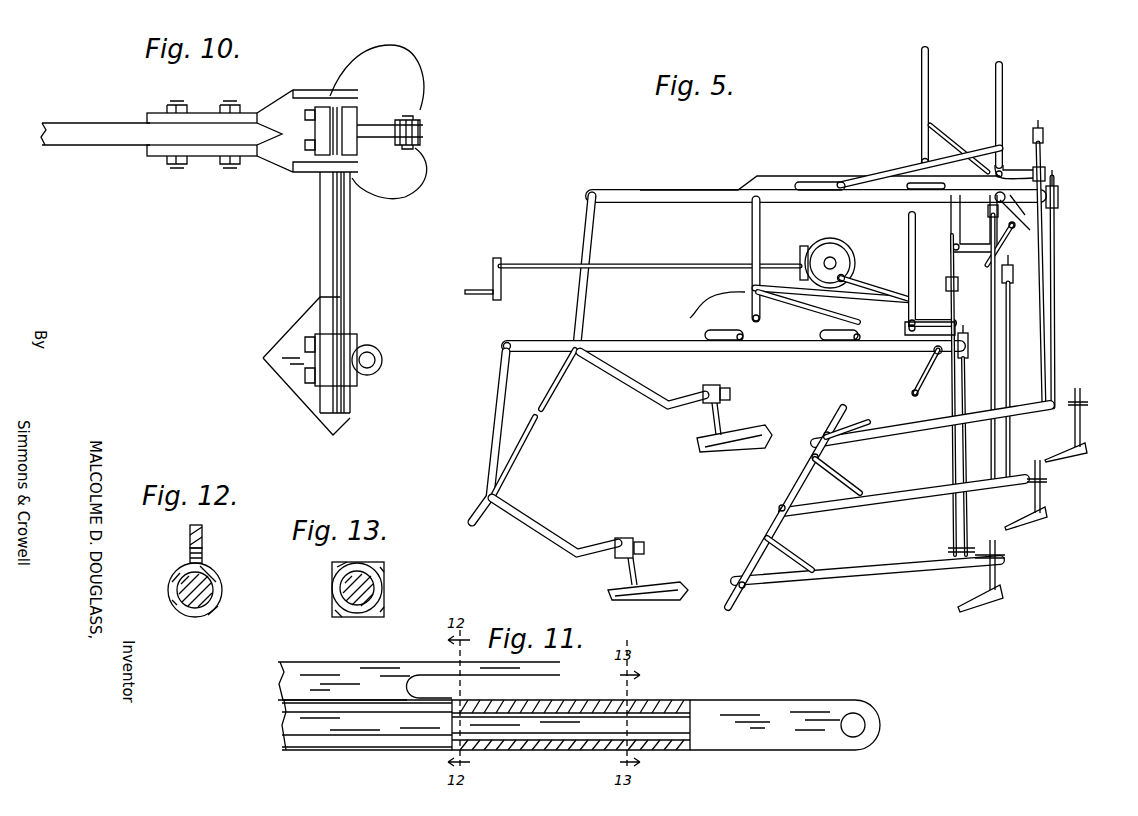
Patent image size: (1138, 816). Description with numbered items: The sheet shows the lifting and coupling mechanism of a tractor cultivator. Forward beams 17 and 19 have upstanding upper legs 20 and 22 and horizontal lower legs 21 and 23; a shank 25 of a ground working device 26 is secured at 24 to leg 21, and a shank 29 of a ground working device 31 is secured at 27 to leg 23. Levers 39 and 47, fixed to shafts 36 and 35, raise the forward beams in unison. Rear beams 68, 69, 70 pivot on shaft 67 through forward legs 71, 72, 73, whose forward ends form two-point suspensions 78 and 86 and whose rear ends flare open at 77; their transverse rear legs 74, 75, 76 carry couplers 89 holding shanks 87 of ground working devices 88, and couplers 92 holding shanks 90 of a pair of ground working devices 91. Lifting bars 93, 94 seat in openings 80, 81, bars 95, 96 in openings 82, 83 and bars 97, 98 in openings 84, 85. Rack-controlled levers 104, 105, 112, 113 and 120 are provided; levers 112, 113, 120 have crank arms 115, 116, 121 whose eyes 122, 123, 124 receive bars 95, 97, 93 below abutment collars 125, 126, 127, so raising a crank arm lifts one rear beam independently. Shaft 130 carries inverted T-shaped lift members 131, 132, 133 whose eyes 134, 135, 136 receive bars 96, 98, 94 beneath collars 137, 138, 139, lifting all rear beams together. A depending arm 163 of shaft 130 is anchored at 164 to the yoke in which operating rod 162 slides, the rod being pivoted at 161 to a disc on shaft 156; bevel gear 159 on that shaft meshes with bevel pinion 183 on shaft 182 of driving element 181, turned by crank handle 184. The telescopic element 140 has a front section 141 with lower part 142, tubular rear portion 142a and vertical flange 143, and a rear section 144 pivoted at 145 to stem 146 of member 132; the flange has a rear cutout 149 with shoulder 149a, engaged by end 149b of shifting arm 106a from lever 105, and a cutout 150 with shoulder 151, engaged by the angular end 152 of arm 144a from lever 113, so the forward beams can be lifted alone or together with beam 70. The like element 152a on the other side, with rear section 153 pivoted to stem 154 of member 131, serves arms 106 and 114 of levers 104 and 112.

In FIG. 10, the forward leg 71 is at (88, 132).
In FIG. 5, the forward leg 71 is at (925, 432).
In FIG. 10, the open flared rear end 77 is at (292, 165).
In FIG. 10, the coupler 92 is at (318, 108).
In FIG. 10, the shank 90 is at (377, 128).
In FIG. 10, the ground working device 91 is at (415, 178).
In FIG. 5, the spring controlled telescopic element 152a is at (675, 186).
In FIG. 5, the lever 47 is at (582, 238).
In FIG. 5, the lower part 142 is at (640, 340).
In FIG. 12, the lower part 142 is at (177, 588).
In FIG. 13, the lower part 142 is at (342, 598).
In FIG. 11, the lower part 142 is at (284, 750).
In FIG. 5, the manually operated driving element 181 is at (655, 255).
In FIG. 5, the elongated shaft 182 is at (700, 258).
In FIG. 5, the crank handle 184 is at (501, 288).
In FIG. 5, the lever 105 is at (755, 238).
In FIG. 5, the rotatable shaft 156 is at (836, 262).
In FIG. 5, the bevel gear 159 is at (832, 248).
In FIG. 5, the bevel pinion 183 is at (800, 248).
In FIG. 5, the pivot 161 is at (808, 280).
In FIG. 5, the operating rod 162 is at (885, 290).
In FIG. 5, the shifting arm 106a is at (790, 296).
In FIG. 5, the lever 113 is at (912, 258).
In FIG. 5, the lever 120 is at (912, 236).
In FIG. 5, the crank arm 121 is at (970, 250).
In FIG. 5, the lever 112 is at (996, 110).
In FIG. 5, the lever 104 is at (885, 95).
In FIG. 5, the shifting arm 106 is at (900, 140).
In FIG. 5, the shifting arm 114 is at (925, 166).
In FIG. 5, the lifting bar 95 is at (1044, 278).
In FIG. 5, the abutment collar 125 is at (1043, 135).
In FIG. 5, the eye 122 is at (1046, 170).
In FIG. 5, the crank arm 115 is at (1025, 165).
In FIG. 5, the rear section 153 is at (1010, 150).
In FIG. 5, the stem 154 is at (1060, 152).
In FIG. 5, the lifting bar 96 is at (1055, 308).
In FIG. 5, the vertical eye 134 is at (1060, 202).
In FIG. 5, the collar 137 is at (1058, 190).
In FIG. 5, the inverted T-shaped lift member 131 is at (1035, 220).
In FIG. 5, the abutment collar 127 is at (1025, 225).
In FIG. 5, the eye 124 is at (995, 252).
In FIG. 5, the vertical eye 136 is at (1015, 272).
In FIG. 5, the collar 139 is at (1012, 262).
In FIG. 5, the lifting bar 97 is at (1000, 356).
In FIG. 5, the lifting bar 98 is at (1009, 344).
In FIG. 5, the inverted T-shaped member 133 is at (1015, 296).
In FIG. 5, the depending arm 163 is at (1075, 298).
In FIG. 5, the eye 123 is at (990, 318).
In FIG. 5, the anchoring point 164 is at (1080, 320).
In FIG. 5, the collar 138 is at (970, 340).
In FIG. 5, the vertical eye 135 is at (1012, 350).
In FIG. 5, the crank arm 116 is at (922, 315).
In FIG. 5, the abutment collar 126 is at (955, 277).
In FIG. 5, the shifting arm 144a is at (885, 328).
In FIG. 5, the pivotal connection 145 is at (928, 355).
In FIG. 5, the stem 146 is at (915, 360).
In FIG. 5, the shaft 130 is at (912, 392).
In FIG. 5, the inverted T-shaped lift member 132 is at (935, 395).
In FIG. 5, the shoulder 149a is at (825, 332).
In FIG. 11, the shoulder 149a is at (458, 688).
In FIG. 5, the cutout 150 is at (745, 312).
In FIG. 5, the shoulder 151 is at (700, 300).
In FIG. 5, the vertical flange 143 is at (670, 318).
In FIG. 12, the vertical flange 143 is at (203, 534).
In FIG. 11, the vertical flange 143 is at (392, 672).
In FIG. 5, the end of arm 149b is at (835, 352).
In FIG. 5, the rear cutout 149 is at (805, 355).
In FIG. 12, the rear cutout 149 is at (203, 556).
In FIG. 5, the front section 141 is at (800, 353).
In FIG. 12, the front section 141 is at (175, 572).
In FIG. 13, the front section 141 is at (336, 578).
In FIG. 11, the front section 141 is at (405, 738).
In FIG. 5, the rear section 144 is at (895, 355).
In FIG. 12, the rear section 144 is at (222, 586).
In FIG. 13, the rear section 144 is at (386, 575).
In FIG. 11, the rear section 144 is at (778, 712).
In FIG. 5, the telescopic element 140 is at (695, 350).
In FIG. 11, the telescopic element 140 is at (712, 694).
In FIG. 5, the angularly disposed forward end 152 is at (725, 352).
In FIG. 5, the lever 39 is at (495, 393).
In FIG. 5, the shaft 35 is at (550, 400).
In FIG. 5, the shaft 36 is at (522, 452).
In FIG. 5, the upper leg 20 is at (565, 550).
In FIG. 5, the forward beam 17 is at (530, 534).
In FIG. 5, the securing point 24 is at (625, 540).
In FIG. 5, the lower leg 21 is at (608, 558).
In FIG. 5, the shank 25 is at (638, 566).
In FIG. 5, the ground working device 26 is at (665, 584).
In FIG. 5, the upper leg 22 is at (650, 400).
In FIG. 5, the forward beam 19 is at (622, 376).
In FIG. 5, the securing point 27 is at (722, 388).
In FIG. 5, the lower leg 23 is at (695, 405).
In FIG. 5, the shank 29 is at (722, 416).
In FIG. 5, the ground working device 31 is at (745, 430).
In FIG. 5, the forward leg 72 is at (870, 510).
In FIG. 5, the forward leg 73 is at (848, 586).
In FIG. 5, the two-point suspension 78 is at (820, 432).
In FIG. 5, the shaft 67 is at (800, 482).
In FIG. 5, the open flared forward end 86 is at (835, 485).
In FIG. 5, the outer rear beam 68 is at (880, 438).
In FIG. 5, the center rear beam 69 is at (850, 508).
In FIG. 5, the outer rear beam 70 is at (840, 585).
In FIG. 5, the lifting bar 93 is at (962, 516).
In FIG. 5, the lifting bar 94 is at (960, 540).
In FIG. 5, the opening 80 is at (955, 565).
In FIG. 5, the opening 81 is at (966, 565).
In FIG. 5, the rear leg 76 is at (998, 565).
In FIG. 5, the opening 82 is at (1043, 407).
In FIG. 5, the opening 83 is at (1053, 407).
In FIG. 5, the opening 84 is at (993, 483).
In FIG. 5, the opening 85 is at (1008, 483).
In FIG. 5, the rear leg 74 is at (1082, 412).
In FIG. 5, the coupler 89 is at (1090, 401).
In FIG. 5, the shank 87 is at (1084, 428).
In FIG. 5, the ground working device 88 is at (1076, 450).
In FIG. 5, the rear leg 75 is at (1045, 488).
In FIG. 12, the tubular rear portion 142a is at (194, 612).
In FIG. 13, the tubular rear portion 142a is at (378, 588).
In FIG. 11, the tubular rear portion 142a is at (497, 750).